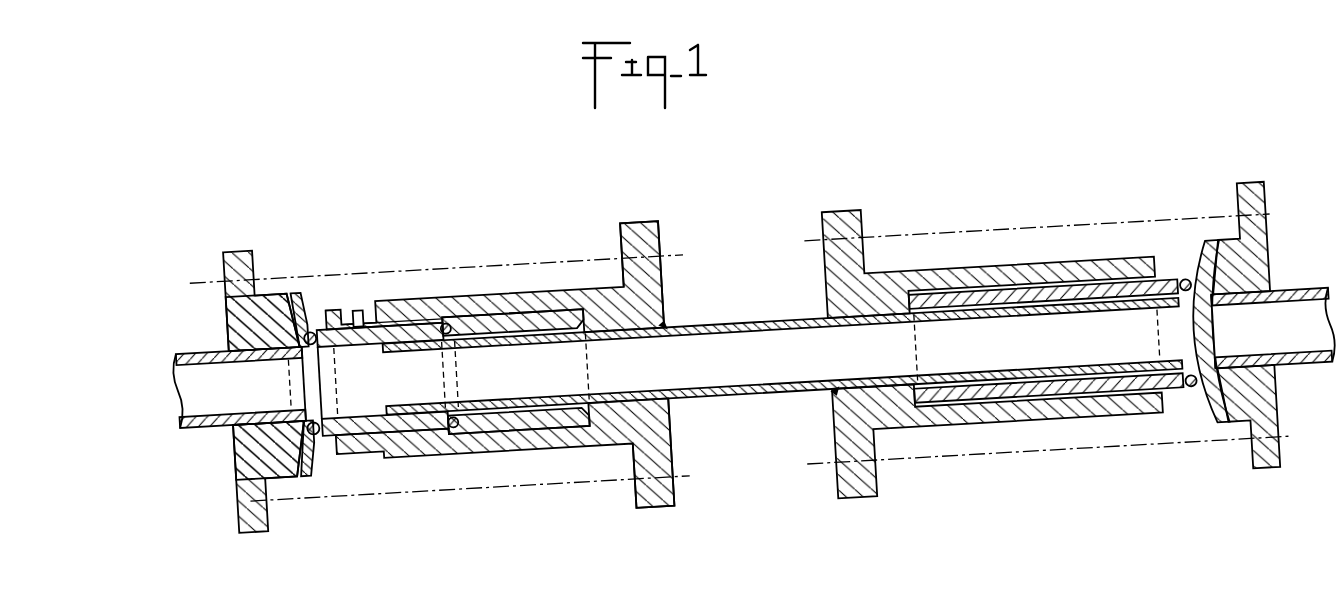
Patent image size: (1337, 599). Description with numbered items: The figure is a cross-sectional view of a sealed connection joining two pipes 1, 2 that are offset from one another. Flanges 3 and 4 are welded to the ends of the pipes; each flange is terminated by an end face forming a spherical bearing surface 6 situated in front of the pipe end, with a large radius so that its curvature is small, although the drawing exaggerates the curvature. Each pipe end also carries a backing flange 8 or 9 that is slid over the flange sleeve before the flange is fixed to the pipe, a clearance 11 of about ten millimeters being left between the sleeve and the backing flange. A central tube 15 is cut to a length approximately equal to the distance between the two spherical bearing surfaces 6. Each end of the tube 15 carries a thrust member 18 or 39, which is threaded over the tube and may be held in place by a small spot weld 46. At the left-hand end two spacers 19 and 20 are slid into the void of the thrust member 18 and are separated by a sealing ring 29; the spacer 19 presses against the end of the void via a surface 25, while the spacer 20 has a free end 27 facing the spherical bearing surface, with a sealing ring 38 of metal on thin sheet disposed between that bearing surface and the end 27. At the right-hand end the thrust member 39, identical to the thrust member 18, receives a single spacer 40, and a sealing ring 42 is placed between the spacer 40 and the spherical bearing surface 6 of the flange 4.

The pipe 1 is at (179, 356).
The pipe 2 is at (1318, 371).
The flange 3 is at (202, 355).
The flange 4 is at (1282, 353).
The spherical bearing surface 6 is at (303, 332).
The backing flange 8 is at (236, 266).
The backing flange 9 is at (1267, 246).
The clearance 11 is at (237, 440).
The tube 15 is at (755, 356).
The thrust member 18 is at (472, 330).
The spacer 19 is at (546, 338).
The spacer 20 is at (413, 340).
The surface 25 is at (583, 456).
The free end 27 is at (322, 345).
The sealing ring 29 is at (446, 445).
The sealing ring 38 is at (310, 447).
The thrust member 39 is at (871, 255).
The spacer 40 is at (1046, 340).
The sealing ring 42 is at (1180, 262).
The spot weld 46 is at (669, 354).